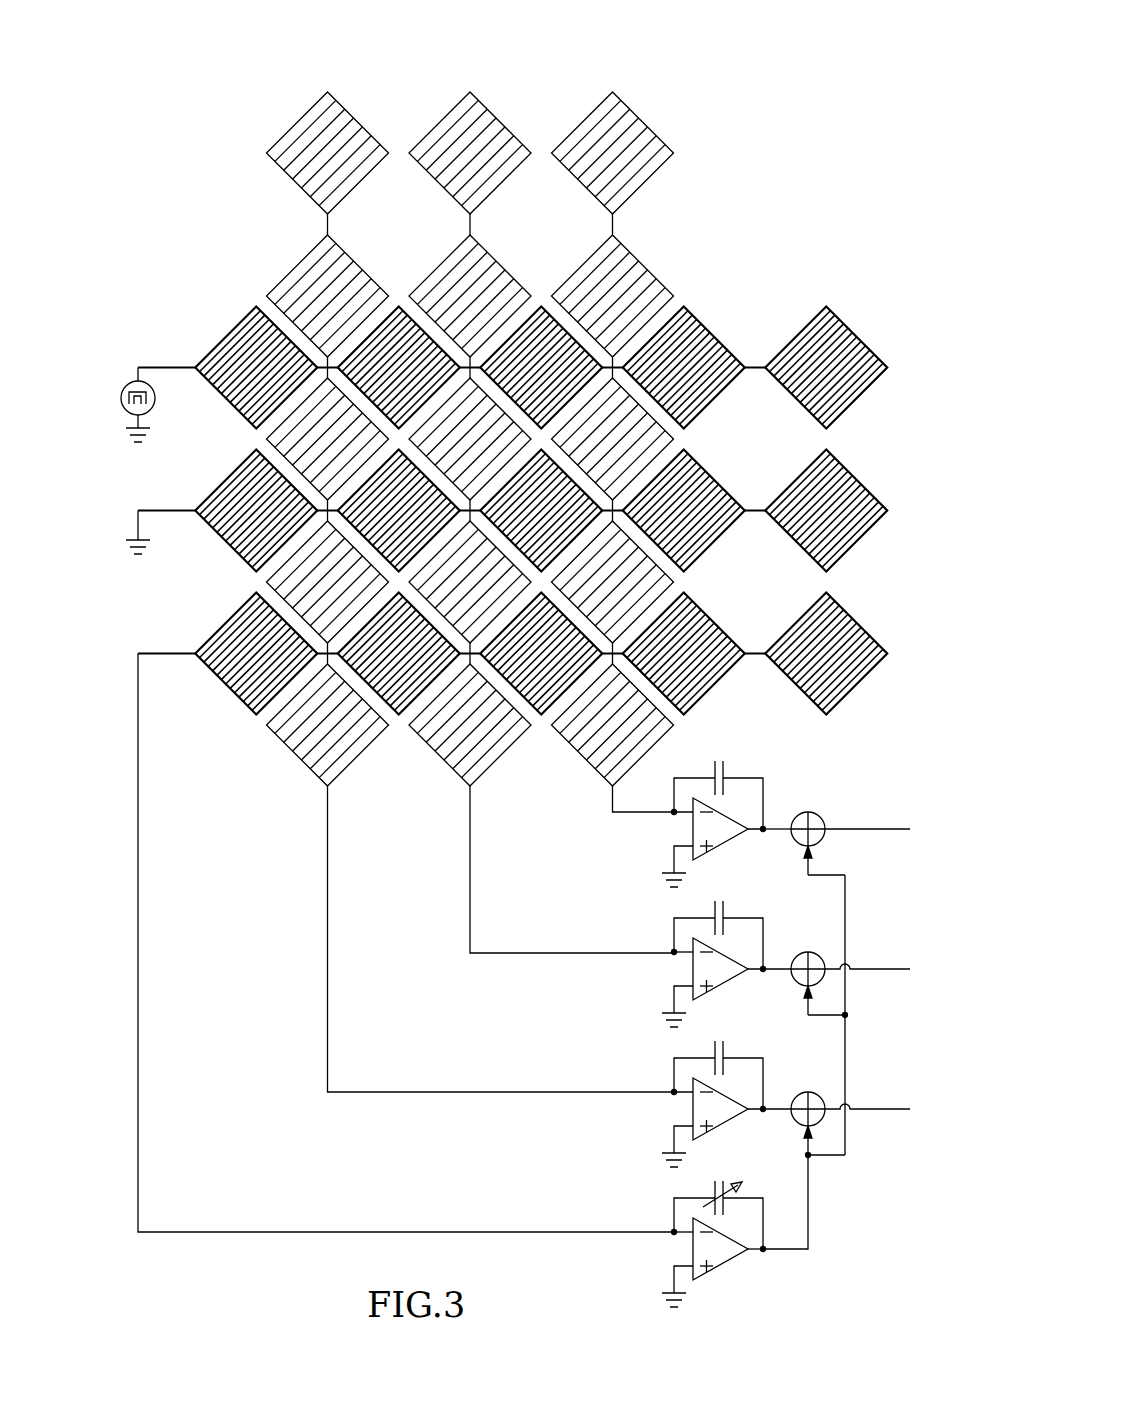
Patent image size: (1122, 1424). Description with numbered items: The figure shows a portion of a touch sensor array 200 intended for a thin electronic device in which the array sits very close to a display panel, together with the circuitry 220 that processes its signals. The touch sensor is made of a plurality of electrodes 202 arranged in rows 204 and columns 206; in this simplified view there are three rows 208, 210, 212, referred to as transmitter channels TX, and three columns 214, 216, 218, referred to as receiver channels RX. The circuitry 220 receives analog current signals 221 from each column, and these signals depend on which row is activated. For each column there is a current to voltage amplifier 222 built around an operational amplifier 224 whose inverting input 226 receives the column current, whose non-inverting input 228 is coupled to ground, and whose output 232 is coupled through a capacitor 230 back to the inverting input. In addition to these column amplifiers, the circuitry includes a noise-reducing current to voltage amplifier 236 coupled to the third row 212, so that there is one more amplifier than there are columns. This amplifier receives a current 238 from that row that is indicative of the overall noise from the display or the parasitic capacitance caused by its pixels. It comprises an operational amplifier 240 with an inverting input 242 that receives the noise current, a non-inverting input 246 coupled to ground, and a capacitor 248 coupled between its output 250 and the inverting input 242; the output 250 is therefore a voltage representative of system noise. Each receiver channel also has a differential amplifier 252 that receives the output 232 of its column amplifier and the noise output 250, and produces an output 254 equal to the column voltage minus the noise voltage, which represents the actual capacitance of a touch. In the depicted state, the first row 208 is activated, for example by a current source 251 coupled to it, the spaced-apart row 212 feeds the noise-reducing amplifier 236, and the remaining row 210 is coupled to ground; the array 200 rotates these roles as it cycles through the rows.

The touch sensor array 200 is at (750, 248).
The electrodes 202 is at (711, 327).
The rows 204 is at (900, 672).
The columns 206 is at (635, 60).
The first row 208 is at (240, 327).
The row 210 is at (237, 470).
The third row 212 is at (237, 612).
The column 214 is at (296, 123).
The column 216 is at (504, 122).
The column 218 is at (652, 131).
The circuitry 220 is at (890, 1218).
The analog current signals 221 is at (473, 840).
The current to voltage amplifiers 222 is at (762, 758).
The operational amplifier 224 is at (718, 978).
The inverting input 226 is at (690, 950).
The non-inverting input 228 is at (690, 986).
The capacitor 230 is at (723, 905).
The output 232 is at (752, 966).
The noise-reducing current to voltage amplifier 236 is at (752, 1277).
The current 238 is at (418, 1232).
The operational amplifier 240 is at (728, 1255).
The inverting input 242 is at (690, 1230).
The non-inverting input 246 is at (690, 1265).
The capacitor 248 is at (725, 1190).
The output 250 is at (810, 1227).
The current source 251 is at (130, 384).
The differential amplifier 252 is at (817, 812).
The output 254 is at (856, 833).